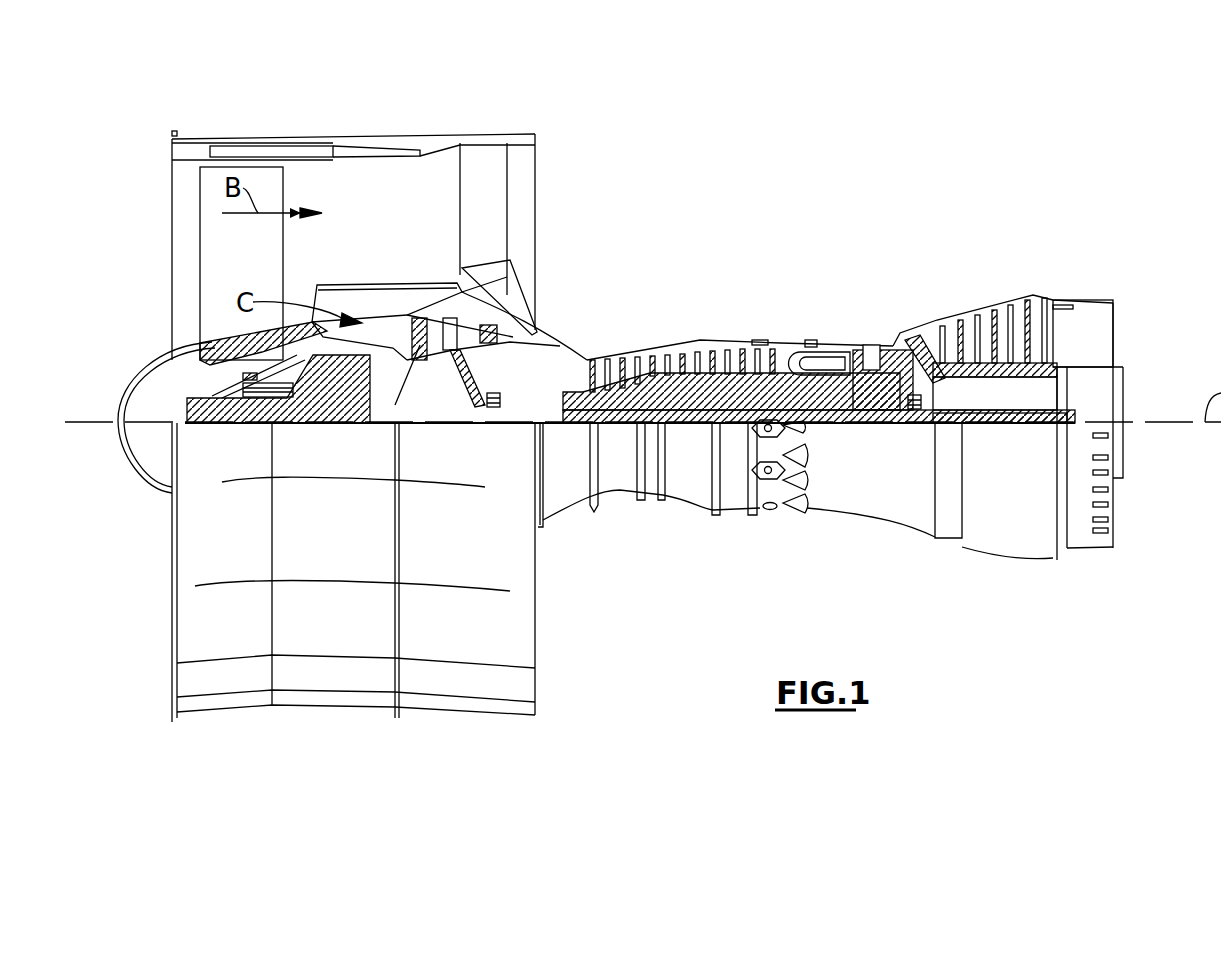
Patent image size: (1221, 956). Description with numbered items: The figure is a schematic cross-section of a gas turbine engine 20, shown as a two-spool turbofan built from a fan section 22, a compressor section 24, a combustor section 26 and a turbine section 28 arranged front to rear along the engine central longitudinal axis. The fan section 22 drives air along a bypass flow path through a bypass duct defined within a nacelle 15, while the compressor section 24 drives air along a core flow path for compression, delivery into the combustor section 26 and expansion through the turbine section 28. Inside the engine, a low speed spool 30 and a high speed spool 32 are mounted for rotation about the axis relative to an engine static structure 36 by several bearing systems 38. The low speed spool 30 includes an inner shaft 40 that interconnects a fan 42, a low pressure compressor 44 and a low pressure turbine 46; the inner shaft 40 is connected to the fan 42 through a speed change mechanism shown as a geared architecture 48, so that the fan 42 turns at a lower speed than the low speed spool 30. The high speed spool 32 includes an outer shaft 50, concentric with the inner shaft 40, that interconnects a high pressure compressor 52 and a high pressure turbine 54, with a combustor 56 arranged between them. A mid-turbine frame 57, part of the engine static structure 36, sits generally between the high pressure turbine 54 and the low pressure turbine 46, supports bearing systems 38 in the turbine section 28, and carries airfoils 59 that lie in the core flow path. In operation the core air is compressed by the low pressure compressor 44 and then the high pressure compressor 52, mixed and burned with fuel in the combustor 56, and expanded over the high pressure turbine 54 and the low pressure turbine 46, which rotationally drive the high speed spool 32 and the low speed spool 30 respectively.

The nacelle 15 is at (351, 143).
The gas turbine engine 20 is at (818, 184).
The fan section 22 is at (282, 128).
The compressor section 24 is at (588, 322).
The combustor section 26 is at (810, 312).
The turbine section 28 is at (962, 275).
The low speed spool 30 is at (692, 435).
The high speed spool 32 is at (733, 383).
The engine static structure 36 is at (732, 520).
The bearing systems 38 is at (493, 407).
The inner shaft 40 is at (552, 425).
The fan 42 is at (257, 268).
The low pressure compressor 44 is at (452, 332).
The low pressure turbine 46 is at (1001, 315).
The geared architecture 48 is at (360, 407).
The outer shaft 50 is at (817, 408).
The high pressure compressor 52 is at (665, 388).
The high pressure turbine 54 is at (874, 343).
The combustor 56 is at (810, 364).
The mid-turbine frame 57 is at (912, 331).
The airfoils 59 is at (943, 393).